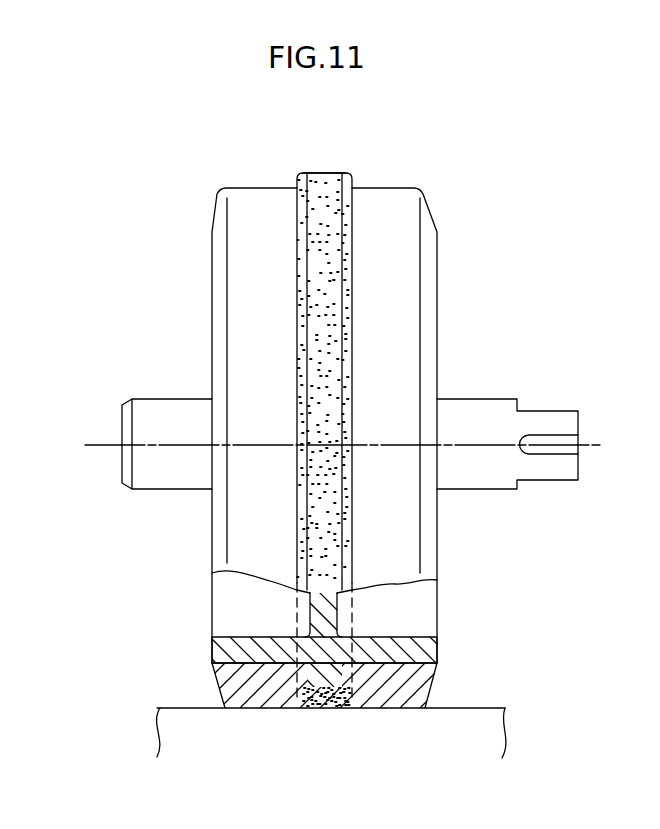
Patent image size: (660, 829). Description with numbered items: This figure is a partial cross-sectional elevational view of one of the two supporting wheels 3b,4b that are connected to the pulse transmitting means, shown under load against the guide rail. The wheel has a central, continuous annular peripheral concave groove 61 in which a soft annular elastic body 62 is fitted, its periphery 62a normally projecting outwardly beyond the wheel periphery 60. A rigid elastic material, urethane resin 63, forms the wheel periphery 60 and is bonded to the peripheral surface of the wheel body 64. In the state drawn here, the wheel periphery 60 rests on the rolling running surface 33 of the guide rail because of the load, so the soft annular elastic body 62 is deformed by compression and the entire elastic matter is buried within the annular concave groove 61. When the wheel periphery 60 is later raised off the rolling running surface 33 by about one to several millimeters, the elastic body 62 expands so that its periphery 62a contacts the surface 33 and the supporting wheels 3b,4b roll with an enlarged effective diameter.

The supporting wheels 3b,4b is at (441, 328).
The wheel periphery 60 is at (268, 190).
The soft annular elastic body 62 is at (313, 273).
The periphery of the annular elastic body 62a is at (320, 180).
The annular concave groove 61 is at (325, 708).
The wheel body 64 is at (423, 655).
The urethane resin 63 is at (393, 683).
The rolling running surface 33 is at (463, 708).